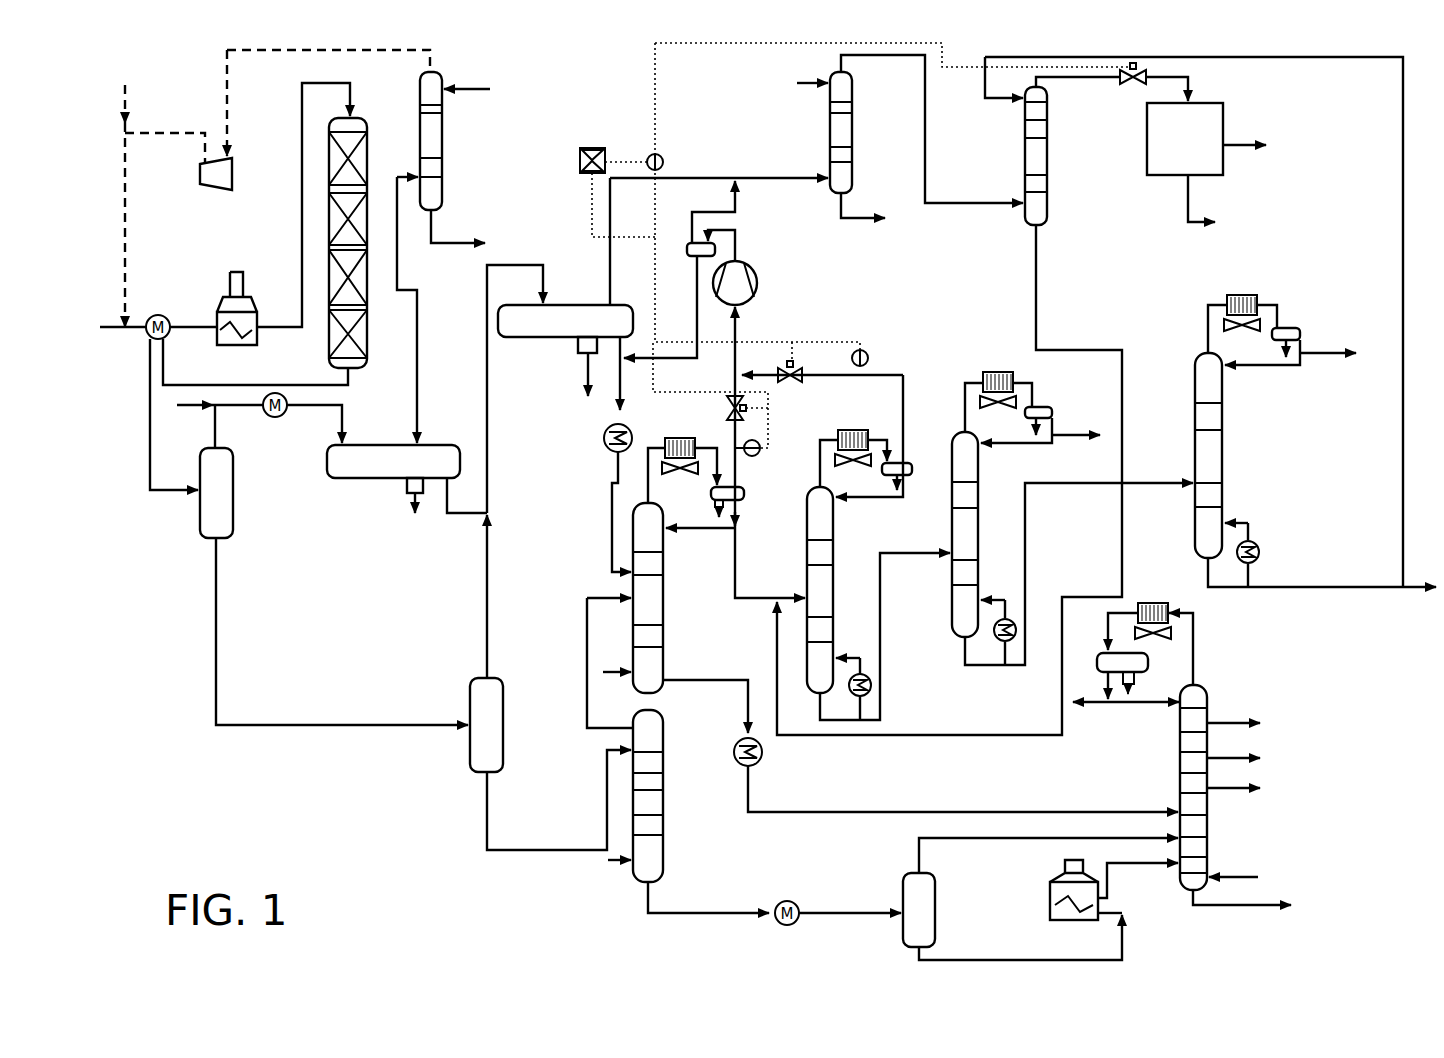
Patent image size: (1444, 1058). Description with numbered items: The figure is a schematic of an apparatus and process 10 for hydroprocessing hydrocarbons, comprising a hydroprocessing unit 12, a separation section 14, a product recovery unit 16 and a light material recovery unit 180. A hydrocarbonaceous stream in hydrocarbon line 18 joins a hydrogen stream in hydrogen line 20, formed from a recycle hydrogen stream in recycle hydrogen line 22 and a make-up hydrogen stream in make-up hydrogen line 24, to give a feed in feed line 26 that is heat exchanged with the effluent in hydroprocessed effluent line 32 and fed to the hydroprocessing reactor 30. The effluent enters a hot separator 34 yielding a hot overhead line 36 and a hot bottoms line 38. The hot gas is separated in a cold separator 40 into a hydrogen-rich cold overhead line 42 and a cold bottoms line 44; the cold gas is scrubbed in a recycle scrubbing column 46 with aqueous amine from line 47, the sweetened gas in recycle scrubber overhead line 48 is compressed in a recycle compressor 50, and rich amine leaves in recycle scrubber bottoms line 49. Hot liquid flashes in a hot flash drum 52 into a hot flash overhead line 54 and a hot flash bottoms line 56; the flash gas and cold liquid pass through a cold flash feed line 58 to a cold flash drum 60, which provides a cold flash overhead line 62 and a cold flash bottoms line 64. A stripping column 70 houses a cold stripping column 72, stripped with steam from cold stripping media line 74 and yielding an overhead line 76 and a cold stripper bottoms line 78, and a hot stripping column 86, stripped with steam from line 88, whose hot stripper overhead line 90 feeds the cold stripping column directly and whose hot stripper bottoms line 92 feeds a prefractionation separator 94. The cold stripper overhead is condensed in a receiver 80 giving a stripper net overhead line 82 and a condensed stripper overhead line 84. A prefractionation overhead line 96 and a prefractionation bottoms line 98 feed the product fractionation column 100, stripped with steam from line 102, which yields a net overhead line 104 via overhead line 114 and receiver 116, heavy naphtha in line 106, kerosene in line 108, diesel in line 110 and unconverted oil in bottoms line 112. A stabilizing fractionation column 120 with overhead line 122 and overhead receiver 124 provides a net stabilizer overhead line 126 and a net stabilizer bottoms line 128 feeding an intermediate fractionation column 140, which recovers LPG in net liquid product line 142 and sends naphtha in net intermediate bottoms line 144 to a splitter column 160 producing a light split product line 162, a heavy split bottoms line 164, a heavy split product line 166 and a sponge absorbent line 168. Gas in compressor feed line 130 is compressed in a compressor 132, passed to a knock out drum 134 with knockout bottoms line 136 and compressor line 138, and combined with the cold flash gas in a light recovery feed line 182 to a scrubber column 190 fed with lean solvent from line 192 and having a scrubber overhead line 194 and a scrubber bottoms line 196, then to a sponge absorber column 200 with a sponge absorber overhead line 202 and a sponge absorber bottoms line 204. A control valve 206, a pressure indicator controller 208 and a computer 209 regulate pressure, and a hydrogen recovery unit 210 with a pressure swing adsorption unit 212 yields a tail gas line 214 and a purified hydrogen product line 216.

The apparatus and process for hydroprocessing hydrocarbons 10 is at (345, 773).
The hydroprocessing unit 12 is at (194, 76).
The separation section 14 is at (183, 618).
The product recovery unit 16 is at (622, 915).
The hydrocarbon line 18 is at (100, 330).
The hydrogen line 20 is at (130, 228).
The recycle hydrogen line 22 is at (156, 139).
The make-up hydrogen line 24 is at (129, 123).
The feed line 26 is at (131, 320).
The hydroprocessing reactor 30 is at (369, 150).
The hydroprocessed effluent line 32 is at (290, 385).
The hot separator 34 is at (233, 490).
The hot overhead line 36 is at (218, 428).
The hot bottoms line 38 is at (218, 627).
The cold separator 40 is at (333, 476).
The cold overhead line 42 is at (415, 340).
The cold bottoms line 44 is at (465, 516).
The recycle scrubbing column 46 is at (445, 128).
The scrubbing liquid feed line 47 is at (478, 88).
The recycle scrubber overhead line 48 is at (330, 52).
The recycle scrubber bottoms line 49 is at (470, 240).
The recycle compressor 50 is at (222, 191).
The hot flash drum 52 is at (478, 678).
The hot flash overhead line 54 is at (486, 620).
The hot flash bottoms line 56 is at (490, 826).
The cold flash feed line 58 is at (490, 460).
The cold flash drum 60 is at (528, 340).
The cold flash overhead line 62 is at (611, 270).
The cold flash bottoms line 64 is at (624, 386).
The stripping column 70 is at (680, 590).
The cold stripping column 72 is at (665, 655).
The cold stripping media line 74 is at (607, 674).
The overhead line 76 is at (650, 490).
The cold stripper bottoms line 78 is at (700, 681).
The receiver 80 is at (733, 480).
The stripper net overhead line 82 is at (738, 470).
The condensed stripper overhead line 84 is at (777, 596).
The hot stripping column 86 is at (665, 795).
The hot stripping media line 88 is at (617, 862).
The hot stripper overhead line 90 is at (580, 682).
The hot stripper bottoms line 92 is at (742, 912).
The prefractionation separator 94 is at (938, 926).
The prefractionation overhead line 96 is at (958, 840).
The prefractionation bottoms line 98 is at (960, 958).
The product fractionation column 100 is at (1178, 740).
The stripping media line 102 is at (1226, 878).
The net overhead line 104 is at (1096, 710).
The heavy naphtha line 106 is at (1233, 722).
The kerosene line 108 is at (1216, 757).
The diesel line 110 is at (1211, 788).
The bottoms line 112 is at (1228, 908).
The overhead line 114 is at (1193, 652).
The receiver 116 is at (1097, 662).
The stabilizing fractionation column 120 is at (806, 526).
The overhead line 122 is at (821, 440).
The overhead receiver 124 is at (905, 484).
The net stabilizer overhead line 126 is at (888, 375).
The net stabilizer bottoms line 128 is at (878, 677).
The compressor feed line 130 is at (740, 331).
The compressor 132 is at (756, 284).
The knock out drum 134 is at (688, 246).
The knockout bottoms line 136 is at (696, 292).
The compressor line 138 is at (737, 205).
The intermediate fractionation column 140 is at (952, 470).
The net liquid product line 142 is at (1065, 432).
The net intermediate bottoms line 144 is at (1026, 535).
The splitter column 160 is at (1195, 390).
The light split product line 162 is at (1316, 352).
The heavy split bottoms line 164 is at (1332, 586).
The heavy split product line 166 is at (1403, 596).
The sponge absorbent line 168 is at (1403, 450).
The light material recovery unit 180 is at (778, 61).
The light recovery feed line 182 is at (778, 176).
The scrubber column 190 is at (853, 130).
The lean solvent line 192 is at (812, 86).
The scrubber overhead line 194 is at (880, 56).
The scrubber bottoms line 196 is at (839, 204).
The sponge absorber column 200 is at (1048, 162).
The sponge absorber overhead line 202 is at (1086, 78).
The sponge absorber bottoms line 204 is at (1035, 262).
The control valve 206 is at (1160, 76).
The pressure indicator controller 208 is at (662, 155).
The computer 209 is at (598, 146).
The hydrogen recovery unit 210 is at (1258, 110).
The pressure swing adsorption unit 212 is at (1147, 147).
The tail gas line 214 is at (1187, 206).
The product line 216 is at (1248, 146).